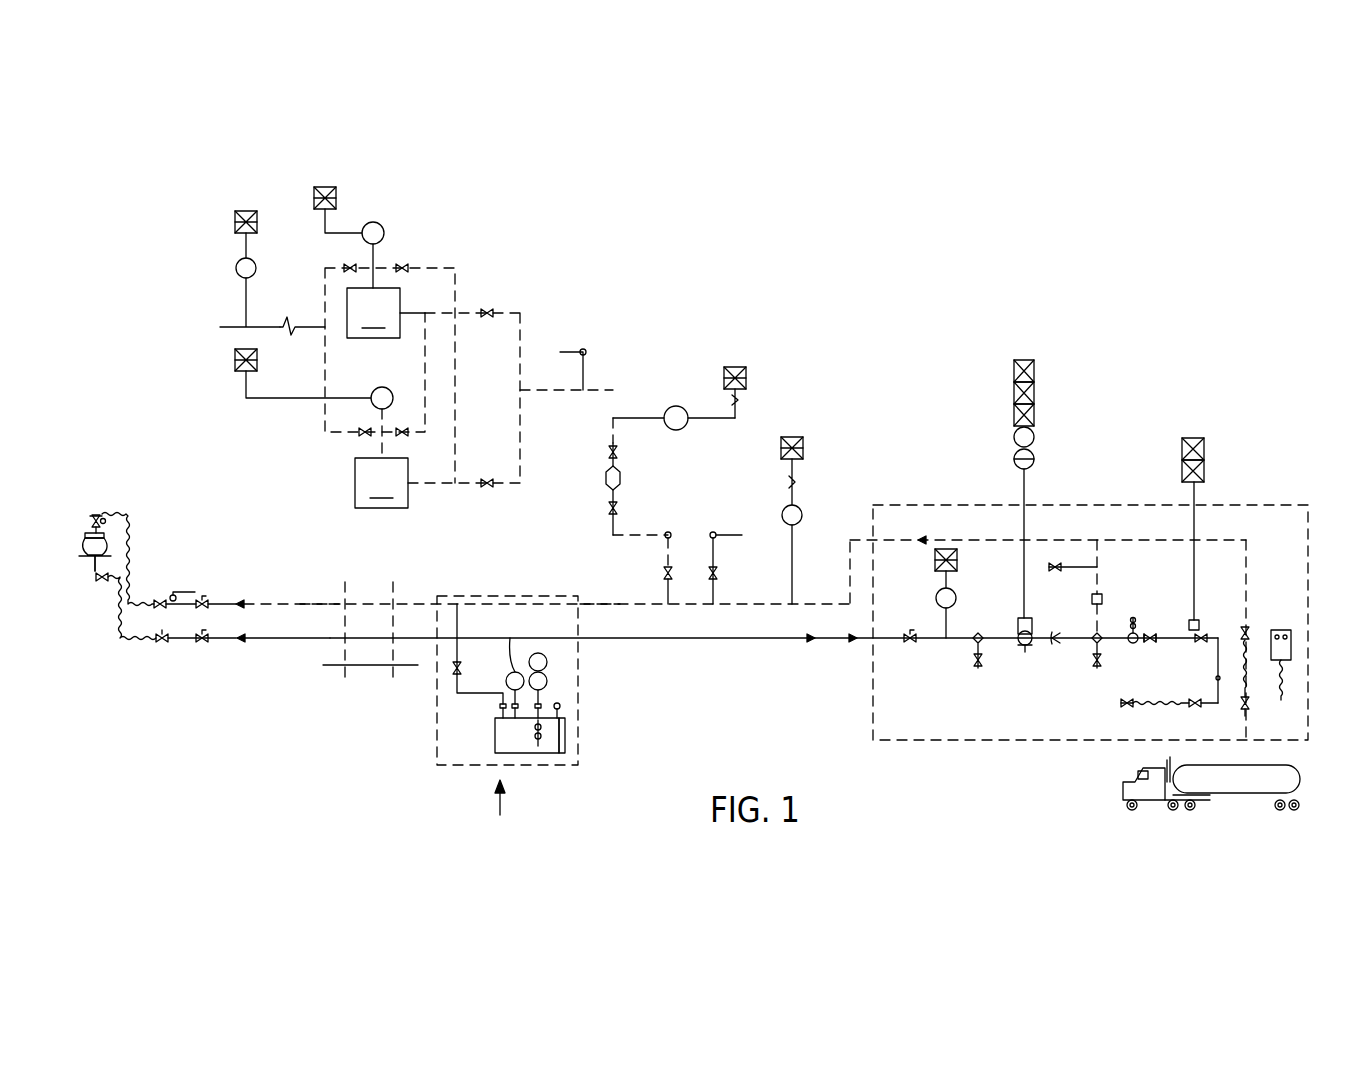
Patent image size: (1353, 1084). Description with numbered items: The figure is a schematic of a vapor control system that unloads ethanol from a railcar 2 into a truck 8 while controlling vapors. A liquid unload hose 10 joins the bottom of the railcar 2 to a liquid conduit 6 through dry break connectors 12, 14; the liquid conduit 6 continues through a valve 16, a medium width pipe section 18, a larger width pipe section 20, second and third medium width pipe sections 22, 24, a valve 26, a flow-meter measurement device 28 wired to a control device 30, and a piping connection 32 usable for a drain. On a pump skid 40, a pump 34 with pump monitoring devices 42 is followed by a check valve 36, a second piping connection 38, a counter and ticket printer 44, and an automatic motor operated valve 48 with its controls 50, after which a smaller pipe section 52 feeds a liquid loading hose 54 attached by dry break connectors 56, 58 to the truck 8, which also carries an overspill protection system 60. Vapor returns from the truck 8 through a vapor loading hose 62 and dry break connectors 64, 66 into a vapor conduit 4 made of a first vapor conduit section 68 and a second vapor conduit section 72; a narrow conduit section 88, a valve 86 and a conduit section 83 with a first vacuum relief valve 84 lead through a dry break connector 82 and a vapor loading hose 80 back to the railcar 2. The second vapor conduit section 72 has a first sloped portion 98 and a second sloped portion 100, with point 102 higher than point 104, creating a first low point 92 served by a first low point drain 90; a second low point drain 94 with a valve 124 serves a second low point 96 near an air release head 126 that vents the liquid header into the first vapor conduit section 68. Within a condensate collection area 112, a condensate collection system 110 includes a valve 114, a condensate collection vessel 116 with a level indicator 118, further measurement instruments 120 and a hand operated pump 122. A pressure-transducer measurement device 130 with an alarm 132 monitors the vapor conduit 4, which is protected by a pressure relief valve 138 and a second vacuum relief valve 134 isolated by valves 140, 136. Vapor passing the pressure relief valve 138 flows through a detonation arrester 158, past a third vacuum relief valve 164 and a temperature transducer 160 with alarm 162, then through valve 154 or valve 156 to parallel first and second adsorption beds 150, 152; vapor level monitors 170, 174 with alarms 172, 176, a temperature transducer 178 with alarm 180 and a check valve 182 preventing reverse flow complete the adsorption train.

The railcar 2 is at (86, 542).
The vapor conduit 4 is at (407, 603).
The liquid conduit 6 is at (295, 642).
The truck 8 is at (1236, 795).
The liquid unload hose 10 is at (122, 645).
The dry break connector 12 is at (96, 582).
The dry break connector 14 is at (162, 645).
The valve 16 is at (202, 645).
The medium width pipe section 18 is at (222, 642).
The larger width pipe section 20 is at (253, 642).
The second medium width pipe section 22 is at (830, 640).
The third medium width pipe section 24 is at (870, 655).
The valve 26 is at (910, 645).
The measurement device 28 is at (935, 598).
The electronic output or control device 30 is at (940, 548).
The piping connection 32 is at (977, 632).
The pump 34 is at (1025, 648).
The check valve 36 is at (1055, 645).
The second piping connection 38 is at (1095, 648).
The pump skid 40 is at (947, 742).
The pump monitoring devices 42 is at (1028, 360).
The counter and ticket printer 44 is at (1138, 626).
The automatic motor operated valve 48 is at (1202, 630).
The outputs or controls 50 is at (1190, 437).
The pipe section 52 is at (1217, 690).
The liquid loading hose 54 is at (1148, 702).
The dry break connector 56 is at (1193, 708).
The dry break connector 58 is at (1125, 708).
The overspill protection system 60 is at (1292, 645).
The vapor loading hose 62 is at (1250, 680).
The dry break connector 64 is at (1245, 707).
The dry break connector 66 is at (1248, 636).
The first vapor conduit section 68 is at (1248, 542).
The second vapor conduit section 72 is at (315, 603).
The vapor loading hose 80 is at (122, 512).
The dry break connector 82 is at (158, 600).
The conduit section 83 is at (180, 607).
The first vacuum relief valve 84 is at (95, 514).
The valve 86 is at (205, 598).
The narrow conduit section 88 is at (236, 601).
The first low point drain 90 is at (458, 627).
The first low point 92 is at (458, 604).
The second low point drain 94 is at (1080, 565).
The second low point 96 is at (1098, 566).
The first sloped portion 98 is at (360, 603).
The second sloped portion 100 is at (597, 603).
The point 102 is at (370, 688).
The point 104 is at (395, 646).
The condensate collection system 110 is at (505, 811).
The condensate collection area 112 is at (578, 766).
The valve 114 is at (452, 667).
The condensate collection vessel 116 is at (566, 732).
The level indicator 118 is at (512, 661).
The measurement instruments 120 is at (547, 660).
The hand operated pump 122 is at (561, 705).
The valve 124 is at (1055, 573).
The air release head 126 is at (1105, 599).
The measurement device 130 is at (803, 513).
The alarm 132 is at (803, 440).
The second vacuum relief valve 134 is at (713, 532).
The valve 136 is at (719, 573).
The pressure relief valve 138 is at (667, 532).
The valve 140 is at (662, 573).
The first adsorption bed 150 is at (390, 373).
The second vapor adsorption bed 152 is at (381, 458).
The valve 154 is at (487, 309).
The valve 156 is at (487, 479).
The detonation arrester 158 is at (604, 478).
The measurement device 160 is at (676, 406).
The alarm 162 is at (734, 367).
The third vacuum relief valve 164 is at (583, 349).
The measurement device 170 is at (373, 222).
The alarm 172 is at (325, 187).
The measurement device 174 is at (382, 387).
The alarm 176 is at (235, 358).
The measurement device 178 is at (236, 268).
The alarm 180 is at (246, 211).
The check valve 182 is at (285, 322).